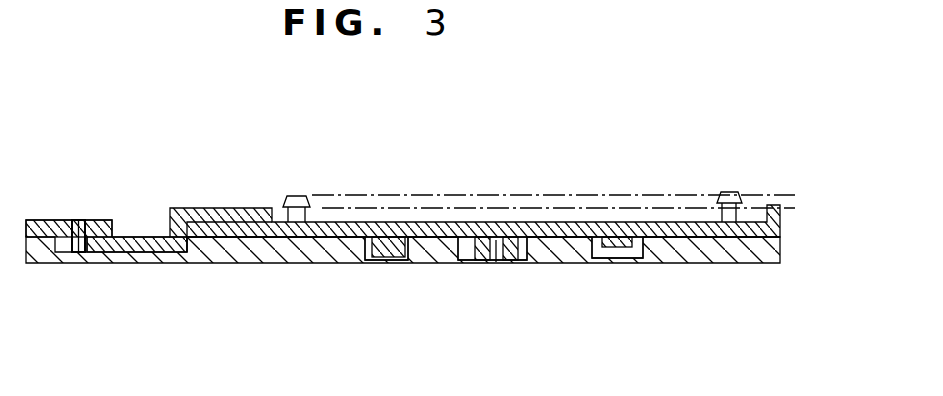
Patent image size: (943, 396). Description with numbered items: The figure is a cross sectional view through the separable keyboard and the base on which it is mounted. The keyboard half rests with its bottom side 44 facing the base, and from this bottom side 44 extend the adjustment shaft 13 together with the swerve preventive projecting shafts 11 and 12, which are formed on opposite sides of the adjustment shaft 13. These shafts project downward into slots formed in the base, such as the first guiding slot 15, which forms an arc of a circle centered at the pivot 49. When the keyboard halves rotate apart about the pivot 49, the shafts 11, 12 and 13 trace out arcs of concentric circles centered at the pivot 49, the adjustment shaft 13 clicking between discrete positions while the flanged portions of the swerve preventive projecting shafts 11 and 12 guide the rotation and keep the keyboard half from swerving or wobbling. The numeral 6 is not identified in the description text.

The base plate 6 is at (720, 265).
The bottom side 44 is at (778, 215).
The pivot 49 is at (75, 222).
The first guiding slot 15 is at (373, 265).
The swerve preventive projecting shaft 11 is at (393, 263).
The adjustment shaft 13 is at (495, 265).
The swerve preventive projecting shaft 12 is at (620, 265).